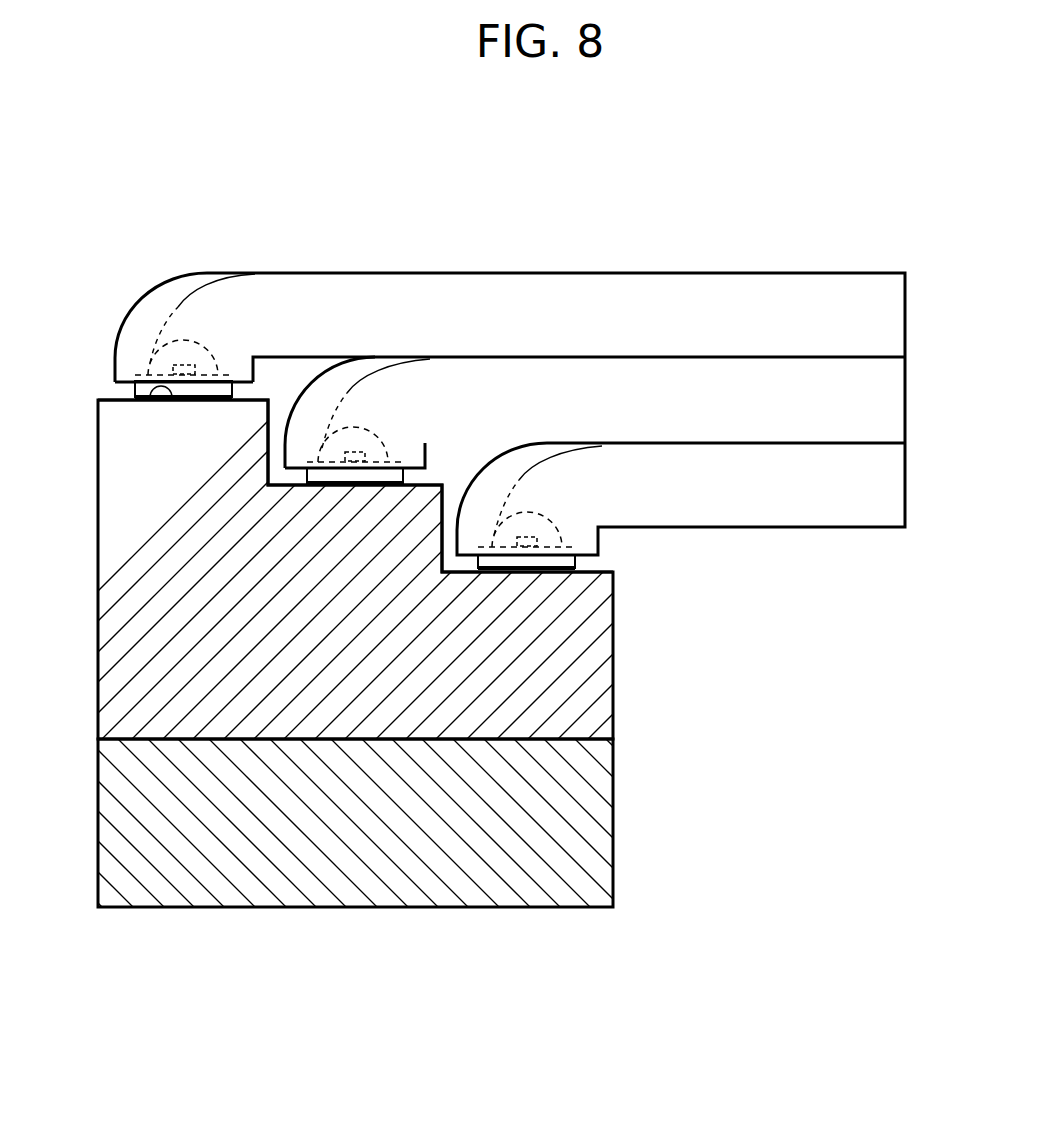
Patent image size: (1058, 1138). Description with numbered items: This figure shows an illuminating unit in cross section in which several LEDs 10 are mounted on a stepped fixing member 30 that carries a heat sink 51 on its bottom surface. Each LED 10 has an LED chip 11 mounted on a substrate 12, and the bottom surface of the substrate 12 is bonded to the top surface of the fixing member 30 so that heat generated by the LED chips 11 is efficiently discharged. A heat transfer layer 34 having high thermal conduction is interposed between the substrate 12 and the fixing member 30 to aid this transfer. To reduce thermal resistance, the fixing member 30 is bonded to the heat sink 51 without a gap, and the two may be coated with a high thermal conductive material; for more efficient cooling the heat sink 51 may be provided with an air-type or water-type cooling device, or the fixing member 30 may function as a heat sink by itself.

The LED 10 is at (181, 336).
The LED chip 11 is at (177, 365).
The substrate 12 is at (137, 384).
The heat transfer layer 34 is at (122, 417).
The fixing member 30 is at (605, 650).
The heat sink 51 is at (605, 837).